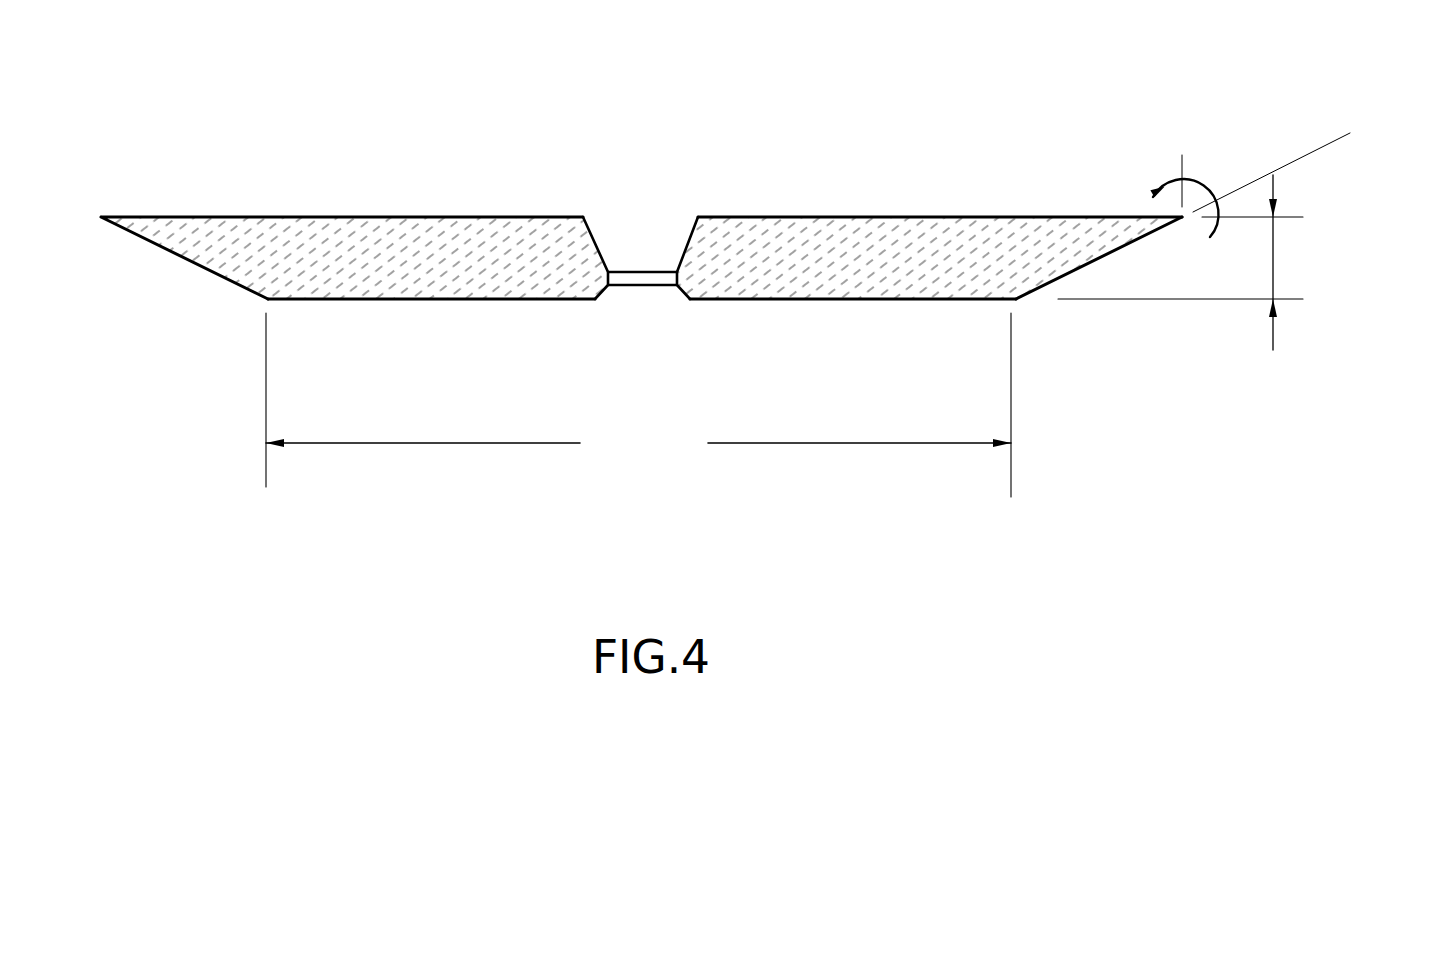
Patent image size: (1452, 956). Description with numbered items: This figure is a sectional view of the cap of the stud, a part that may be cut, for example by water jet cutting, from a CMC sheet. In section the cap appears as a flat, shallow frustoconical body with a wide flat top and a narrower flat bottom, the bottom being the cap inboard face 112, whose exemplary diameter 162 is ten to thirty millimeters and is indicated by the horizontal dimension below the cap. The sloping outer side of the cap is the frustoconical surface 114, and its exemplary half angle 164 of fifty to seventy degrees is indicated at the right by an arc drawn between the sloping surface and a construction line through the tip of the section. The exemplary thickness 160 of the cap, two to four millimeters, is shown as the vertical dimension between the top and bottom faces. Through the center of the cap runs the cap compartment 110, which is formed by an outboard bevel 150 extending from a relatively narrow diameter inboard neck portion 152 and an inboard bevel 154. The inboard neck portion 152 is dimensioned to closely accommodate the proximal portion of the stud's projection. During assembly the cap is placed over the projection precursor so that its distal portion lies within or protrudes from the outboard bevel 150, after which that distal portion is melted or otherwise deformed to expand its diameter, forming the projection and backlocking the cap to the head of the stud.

The cap compartment 110 is at (672, 232).
The cap inboard face 112 is at (960, 299).
The frustoconical surface 114 is at (1123, 247).
The outboard bevel 150 is at (598, 242).
The inboard neck portion 152 is at (620, 280).
The inboard bevel 154 is at (680, 287).
The thickness 160 is at (1273, 260).
The diameter 162 is at (638, 405).
The half angle 164 is at (1197, 187).